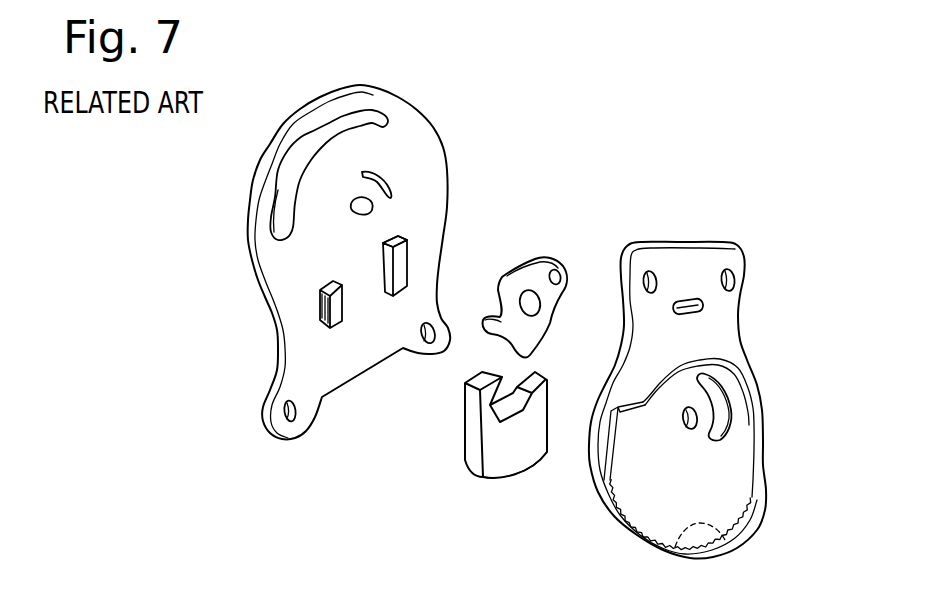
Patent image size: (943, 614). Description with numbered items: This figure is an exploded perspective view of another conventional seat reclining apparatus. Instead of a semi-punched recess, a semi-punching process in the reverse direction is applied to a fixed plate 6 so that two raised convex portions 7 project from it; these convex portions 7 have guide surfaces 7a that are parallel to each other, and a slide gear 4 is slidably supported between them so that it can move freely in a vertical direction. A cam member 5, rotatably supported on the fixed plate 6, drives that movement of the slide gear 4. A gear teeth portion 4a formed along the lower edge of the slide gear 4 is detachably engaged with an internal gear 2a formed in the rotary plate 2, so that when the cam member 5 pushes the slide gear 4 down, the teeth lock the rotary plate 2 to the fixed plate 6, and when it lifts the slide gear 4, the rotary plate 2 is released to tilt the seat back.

The rotary plate 2 is at (683, 262).
The internal gear 2a is at (737, 547).
The slide gear 4 is at (488, 442).
The gear teeth portion 4a is at (502, 477).
The cam member 5 is at (505, 275).
The fixed plate 6 is at (415, 143).
The convex portions 7 is at (400, 256).
The guide surfaces 7a is at (385, 267).